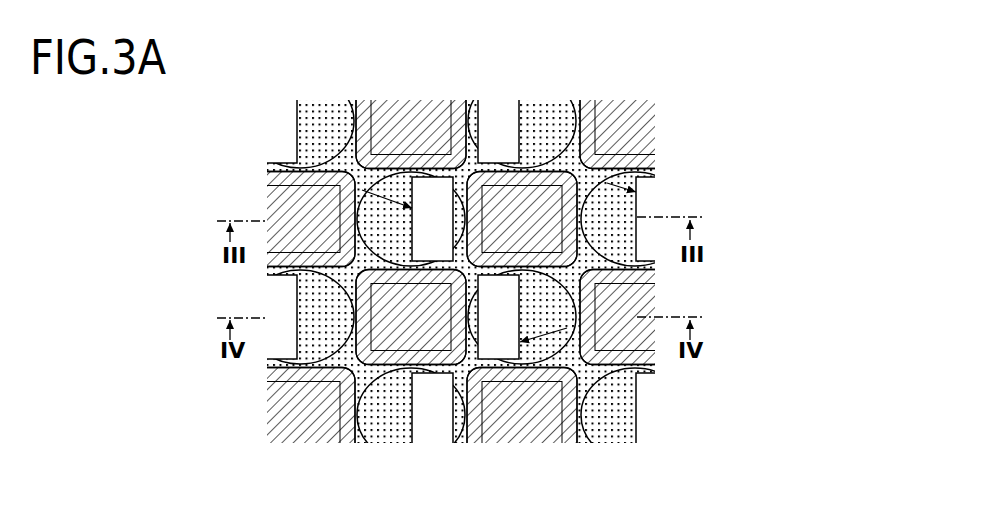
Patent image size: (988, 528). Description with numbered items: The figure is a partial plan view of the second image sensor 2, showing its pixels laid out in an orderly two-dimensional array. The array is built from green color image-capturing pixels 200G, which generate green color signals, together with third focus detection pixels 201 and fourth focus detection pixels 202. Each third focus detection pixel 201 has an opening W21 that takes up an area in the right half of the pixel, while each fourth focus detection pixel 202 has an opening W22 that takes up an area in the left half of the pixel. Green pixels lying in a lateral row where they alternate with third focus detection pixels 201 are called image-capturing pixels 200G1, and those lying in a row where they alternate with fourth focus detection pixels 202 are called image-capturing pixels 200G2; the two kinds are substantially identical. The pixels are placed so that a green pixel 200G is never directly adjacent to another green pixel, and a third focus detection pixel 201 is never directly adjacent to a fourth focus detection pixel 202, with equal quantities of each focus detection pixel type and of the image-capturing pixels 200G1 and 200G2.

The second image sensor 2 is at (461, 243).
The third focus detection pixel 201 is at (398, 178).
The fourth focus detection pixel 202 is at (295, 358).
The green color image-capturing pixel 200G is at (461, 263).
The image-capturing pixel 200G1 is at (292, 253).
The image-capturing pixel 200G2 is at (435, 103).
The opening W21 is at (362, 190).
The opening W22 is at (567, 328).